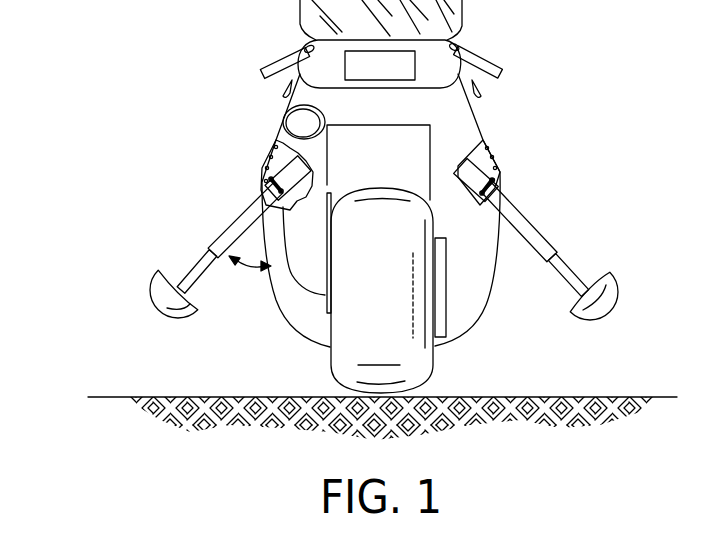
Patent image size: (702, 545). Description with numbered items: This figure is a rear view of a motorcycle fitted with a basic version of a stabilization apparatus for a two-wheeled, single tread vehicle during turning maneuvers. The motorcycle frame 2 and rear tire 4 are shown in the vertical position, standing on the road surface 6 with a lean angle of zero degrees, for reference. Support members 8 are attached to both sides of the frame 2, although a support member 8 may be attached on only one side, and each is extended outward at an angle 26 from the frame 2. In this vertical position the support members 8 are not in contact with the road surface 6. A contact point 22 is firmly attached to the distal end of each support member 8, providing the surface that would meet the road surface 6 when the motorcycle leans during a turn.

The motorcycle frame 2 is at (462, 120).
The rear tire 4 is at (436, 378).
The road surface 6 is at (102, 395).
The support member 8 is at (243, 218).
The contact point 22 is at (162, 292).
The angle 26 is at (248, 266).